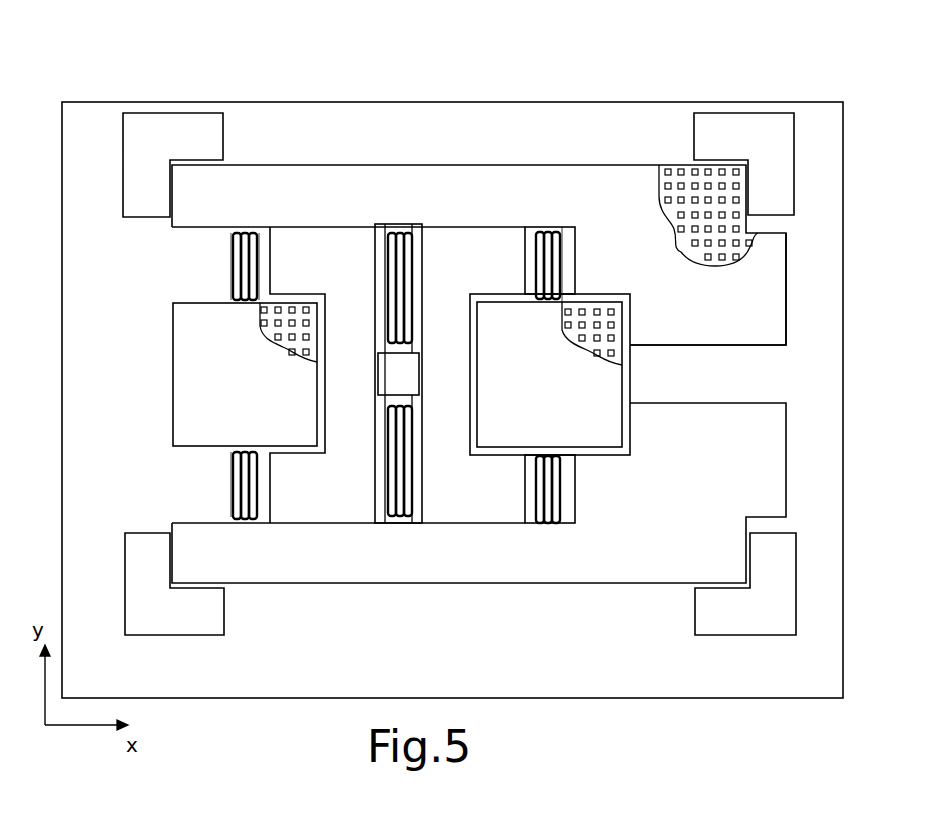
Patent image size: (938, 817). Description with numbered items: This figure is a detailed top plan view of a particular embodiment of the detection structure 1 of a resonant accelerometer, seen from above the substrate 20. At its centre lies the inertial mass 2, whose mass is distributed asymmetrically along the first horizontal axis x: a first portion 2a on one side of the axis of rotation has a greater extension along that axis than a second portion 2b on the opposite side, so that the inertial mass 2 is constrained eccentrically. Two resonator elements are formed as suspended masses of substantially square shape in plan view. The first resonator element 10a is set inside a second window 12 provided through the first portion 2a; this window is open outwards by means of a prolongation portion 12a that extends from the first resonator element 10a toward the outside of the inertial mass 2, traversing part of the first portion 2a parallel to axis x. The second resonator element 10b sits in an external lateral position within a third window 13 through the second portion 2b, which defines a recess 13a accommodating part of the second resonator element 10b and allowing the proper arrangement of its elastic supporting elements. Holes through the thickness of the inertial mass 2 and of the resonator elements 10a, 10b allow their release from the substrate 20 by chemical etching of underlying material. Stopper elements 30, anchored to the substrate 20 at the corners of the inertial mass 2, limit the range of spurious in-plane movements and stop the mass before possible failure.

The detection structure 1 is at (471, 359).
The inertial mass 2 is at (509, 375).
The first portion 2a is at (628, 192).
The second portion 2b is at (325, 567).
The first resonator element 10a is at (578, 383).
The second resonator element 10b is at (230, 400).
The second window 12 is at (563, 249).
The prolongation portion 12a is at (731, 352).
The third window 13 is at (262, 246).
The recess 13a is at (298, 440).
The substrate 20 is at (830, 305).
The stopper elements 30 is at (143, 183).